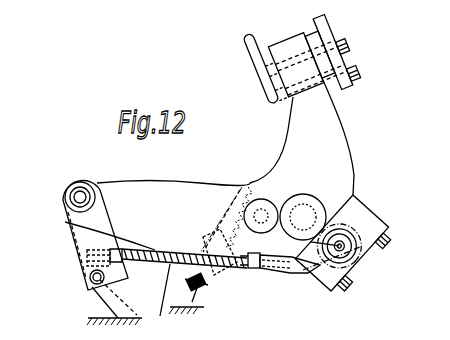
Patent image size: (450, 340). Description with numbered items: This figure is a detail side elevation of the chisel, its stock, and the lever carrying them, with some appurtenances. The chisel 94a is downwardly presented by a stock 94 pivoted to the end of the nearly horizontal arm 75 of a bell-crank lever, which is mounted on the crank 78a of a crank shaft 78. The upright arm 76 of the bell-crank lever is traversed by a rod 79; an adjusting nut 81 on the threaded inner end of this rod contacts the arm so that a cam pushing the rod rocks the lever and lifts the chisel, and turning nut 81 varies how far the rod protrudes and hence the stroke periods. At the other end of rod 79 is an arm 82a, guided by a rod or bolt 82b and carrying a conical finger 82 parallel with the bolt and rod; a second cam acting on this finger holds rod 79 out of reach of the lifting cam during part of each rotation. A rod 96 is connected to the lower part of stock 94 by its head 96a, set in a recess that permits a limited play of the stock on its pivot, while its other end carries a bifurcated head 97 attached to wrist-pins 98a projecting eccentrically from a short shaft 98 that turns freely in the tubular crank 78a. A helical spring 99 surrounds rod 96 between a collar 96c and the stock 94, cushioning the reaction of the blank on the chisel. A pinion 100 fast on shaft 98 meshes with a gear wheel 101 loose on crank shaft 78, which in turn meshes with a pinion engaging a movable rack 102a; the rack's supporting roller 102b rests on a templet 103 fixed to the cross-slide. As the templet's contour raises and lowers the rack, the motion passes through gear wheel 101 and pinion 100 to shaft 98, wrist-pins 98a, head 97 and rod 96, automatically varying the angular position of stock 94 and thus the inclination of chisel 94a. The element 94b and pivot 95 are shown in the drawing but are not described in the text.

The arm 75 is at (157, 216).
The upright arm 76 is at (302, 137).
The crank shaft 78 is at (306, 206).
The crank 78a is at (357, 259).
The rod 79 is at (256, 79).
The adjusting nut 81 is at (244, 48).
The conical finger 82 is at (337, 90).
The arm 82a is at (352, 27).
The rod or bolt 82b is at (358, 54).
The stock 94 is at (76, 243).
The chisel 94a is at (111, 309).
The bolt 94b is at (86, 272).
The pivot 95 is at (95, 183).
The rod 96 is at (233, 269).
The head 96a is at (86, 260).
The collar 96c is at (257, 268).
The bifurcated head 97 is at (284, 274).
The short shaft 98 is at (341, 243).
The wrist-pins 98a is at (335, 272).
The helical spring 99 is at (158, 302).
The pinion 100 is at (352, 270).
The gear wheel 101 is at (283, 204).
The movable rack 102a is at (243, 193).
The supporting roller 102b is at (202, 294).
The templet 103 is at (190, 322).